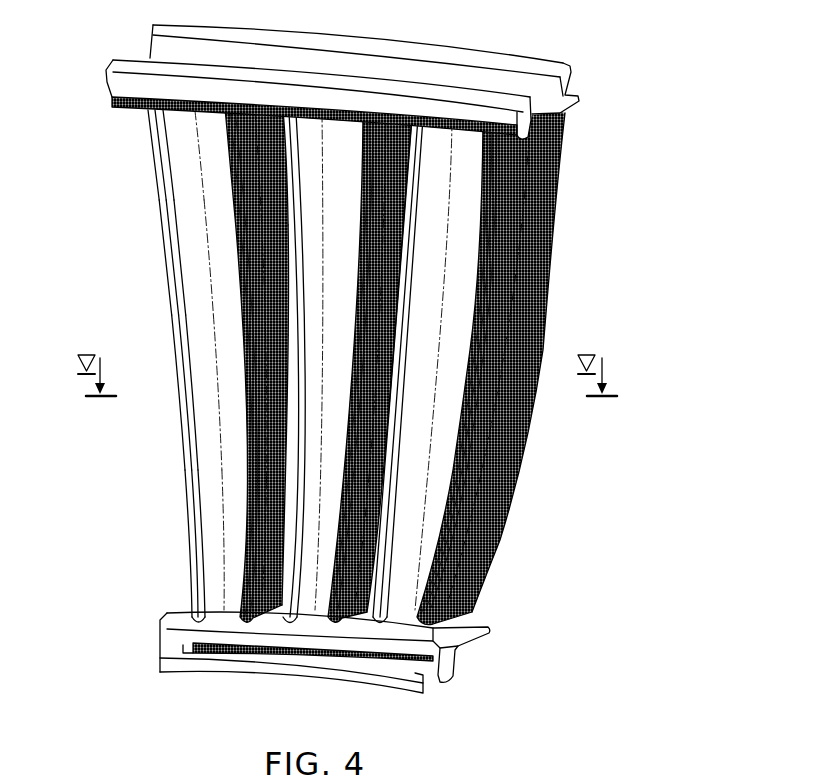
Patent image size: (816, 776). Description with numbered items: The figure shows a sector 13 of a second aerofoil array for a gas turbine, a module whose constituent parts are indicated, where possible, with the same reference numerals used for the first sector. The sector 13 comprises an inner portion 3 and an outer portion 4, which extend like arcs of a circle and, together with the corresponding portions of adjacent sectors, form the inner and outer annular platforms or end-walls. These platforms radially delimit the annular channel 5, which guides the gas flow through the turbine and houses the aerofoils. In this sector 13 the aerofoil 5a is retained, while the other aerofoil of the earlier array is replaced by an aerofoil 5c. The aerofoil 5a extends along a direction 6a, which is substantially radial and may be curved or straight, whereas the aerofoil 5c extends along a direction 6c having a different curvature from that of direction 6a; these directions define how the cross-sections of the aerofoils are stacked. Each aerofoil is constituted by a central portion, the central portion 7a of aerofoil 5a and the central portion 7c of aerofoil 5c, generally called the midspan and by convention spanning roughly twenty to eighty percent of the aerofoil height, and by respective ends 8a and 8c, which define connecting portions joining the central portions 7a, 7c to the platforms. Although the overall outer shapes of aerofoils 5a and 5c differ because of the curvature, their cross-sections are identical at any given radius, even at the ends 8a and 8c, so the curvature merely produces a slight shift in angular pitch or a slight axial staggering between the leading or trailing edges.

The inner portion 3 is at (460, 657).
The outer portion 4 is at (541, 77).
The annular channel 5 is at (597, 325).
The aerofoil 5a is at (190, 162).
The aerofoil 5c is at (250, 158).
The direction 6a is at (203, 233).
The direction 6c is at (237, 290).
The central portion 7a is at (174, 343).
The central portion 7c is at (247, 383).
The end 8a is at (188, 562).
The end 8c is at (237, 585).
The sector 13 is at (375, 371).